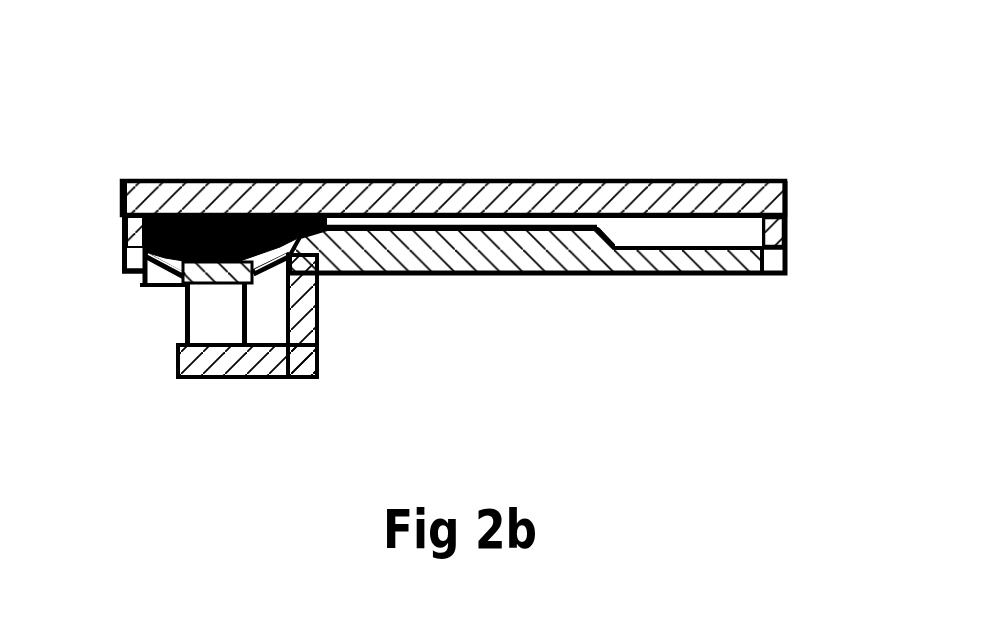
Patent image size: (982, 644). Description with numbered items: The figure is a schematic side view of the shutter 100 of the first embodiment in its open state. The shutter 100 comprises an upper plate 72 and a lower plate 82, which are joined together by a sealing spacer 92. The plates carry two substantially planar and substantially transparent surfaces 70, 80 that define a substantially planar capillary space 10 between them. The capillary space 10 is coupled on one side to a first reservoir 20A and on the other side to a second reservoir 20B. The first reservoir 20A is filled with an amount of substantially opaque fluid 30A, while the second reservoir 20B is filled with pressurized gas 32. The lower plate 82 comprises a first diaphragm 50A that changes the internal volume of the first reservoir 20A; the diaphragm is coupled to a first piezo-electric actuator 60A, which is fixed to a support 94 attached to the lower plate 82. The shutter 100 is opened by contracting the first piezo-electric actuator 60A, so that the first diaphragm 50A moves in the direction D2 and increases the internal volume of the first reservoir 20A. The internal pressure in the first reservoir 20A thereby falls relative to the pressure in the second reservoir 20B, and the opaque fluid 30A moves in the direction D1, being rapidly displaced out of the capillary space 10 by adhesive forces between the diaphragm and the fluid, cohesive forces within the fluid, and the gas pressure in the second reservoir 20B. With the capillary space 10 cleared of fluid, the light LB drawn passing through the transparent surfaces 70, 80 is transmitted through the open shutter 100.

The shutter 100 is at (256, 70).
The upper plate 72 is at (787, 196).
The lower plate 82 is at (787, 262).
The sealing spacer 92 is at (126, 230).
The substantially planar and substantially transparent surface 70 is at (418, 274).
The substantially planar and substantially transparent surface 80 is at (471, 274).
The pressurized gas 32 is at (663, 272).
The opaque fluid 30A is at (123, 197).
The first diaphragm 50A is at (141, 287).
The first piezo-electric actuator 60A is at (187, 310).
The support 94 is at (177, 362).
The first reservoir 20A is at (310, 170).
The capillary space 10 is at (592, 170).
The second reservoir 20B is at (757, 170).
The light beam LB is at (372, 389).
The direction D1 is at (498, 29).
The direction D2 is at (217, 287).